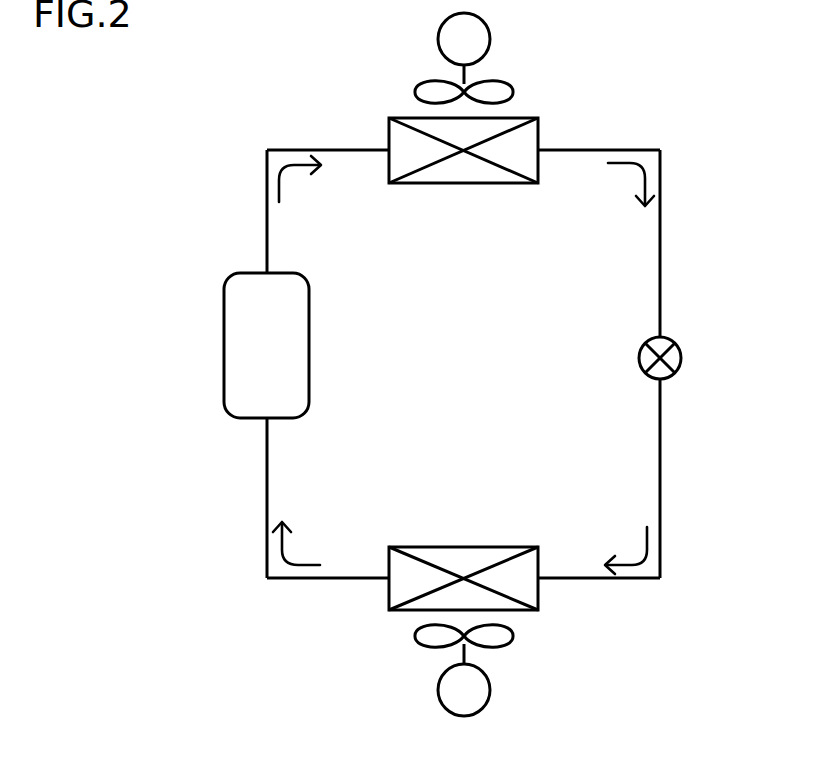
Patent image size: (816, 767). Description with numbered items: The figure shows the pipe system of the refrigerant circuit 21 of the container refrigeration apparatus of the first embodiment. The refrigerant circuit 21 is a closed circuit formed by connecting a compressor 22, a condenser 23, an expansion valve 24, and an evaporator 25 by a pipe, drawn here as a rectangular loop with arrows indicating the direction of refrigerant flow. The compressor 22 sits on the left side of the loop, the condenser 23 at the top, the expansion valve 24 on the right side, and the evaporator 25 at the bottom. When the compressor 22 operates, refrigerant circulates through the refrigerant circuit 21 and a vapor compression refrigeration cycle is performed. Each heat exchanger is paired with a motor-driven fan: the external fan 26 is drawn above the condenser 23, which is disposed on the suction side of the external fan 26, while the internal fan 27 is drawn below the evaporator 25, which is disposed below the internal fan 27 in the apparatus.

The refrigerant circuit 21 is at (632, 148).
The compressor 22 is at (223, 344).
The condenser 23 is at (464, 184).
The expansion valve 24 is at (682, 356).
The evaporator 25 is at (462, 547).
The external fan 26 is at (515, 90).
The internal fan 27 is at (515, 634).